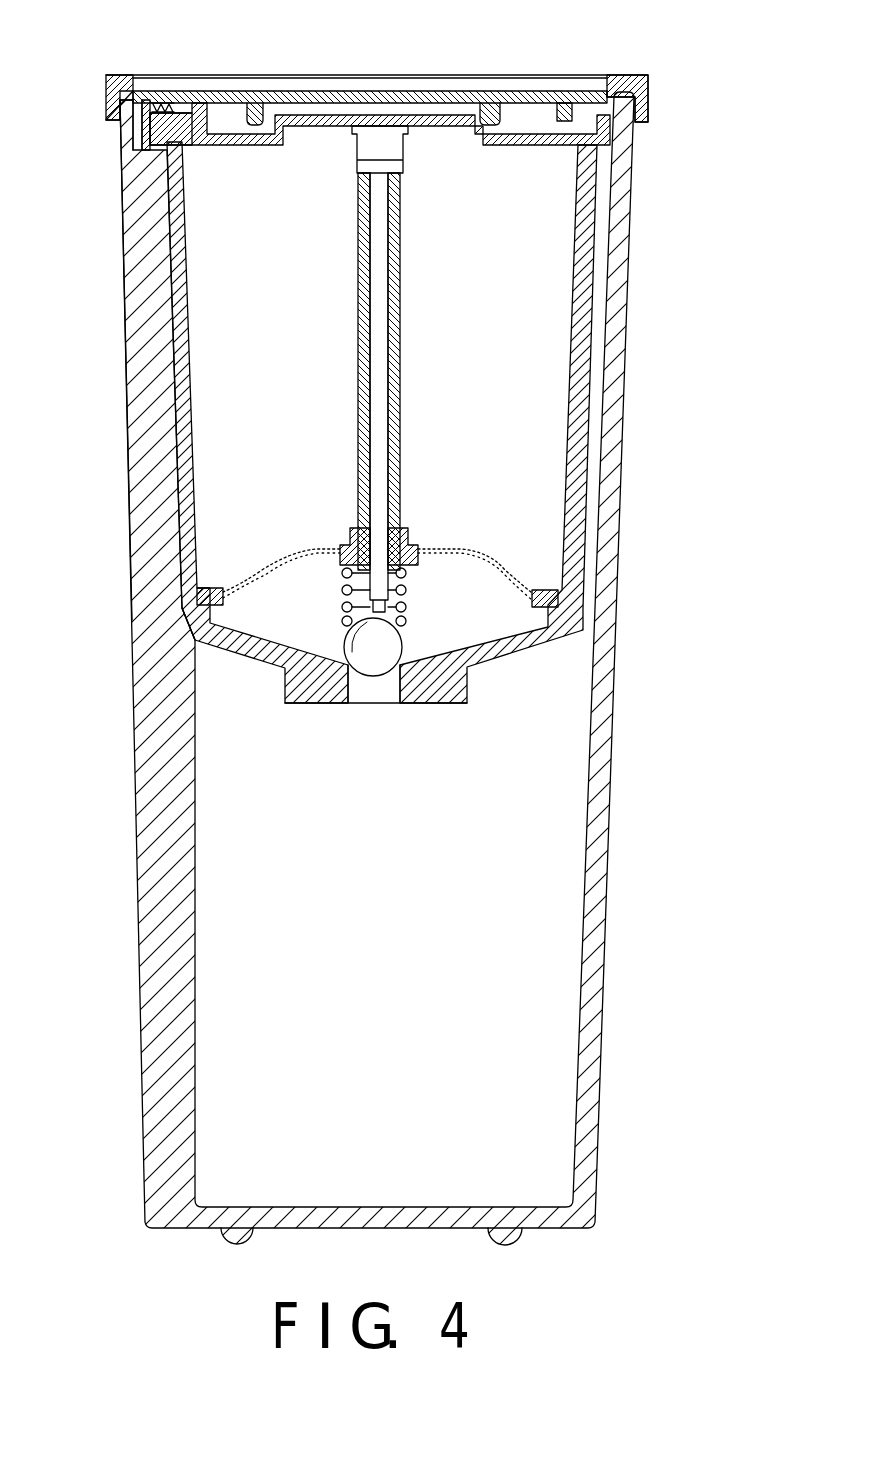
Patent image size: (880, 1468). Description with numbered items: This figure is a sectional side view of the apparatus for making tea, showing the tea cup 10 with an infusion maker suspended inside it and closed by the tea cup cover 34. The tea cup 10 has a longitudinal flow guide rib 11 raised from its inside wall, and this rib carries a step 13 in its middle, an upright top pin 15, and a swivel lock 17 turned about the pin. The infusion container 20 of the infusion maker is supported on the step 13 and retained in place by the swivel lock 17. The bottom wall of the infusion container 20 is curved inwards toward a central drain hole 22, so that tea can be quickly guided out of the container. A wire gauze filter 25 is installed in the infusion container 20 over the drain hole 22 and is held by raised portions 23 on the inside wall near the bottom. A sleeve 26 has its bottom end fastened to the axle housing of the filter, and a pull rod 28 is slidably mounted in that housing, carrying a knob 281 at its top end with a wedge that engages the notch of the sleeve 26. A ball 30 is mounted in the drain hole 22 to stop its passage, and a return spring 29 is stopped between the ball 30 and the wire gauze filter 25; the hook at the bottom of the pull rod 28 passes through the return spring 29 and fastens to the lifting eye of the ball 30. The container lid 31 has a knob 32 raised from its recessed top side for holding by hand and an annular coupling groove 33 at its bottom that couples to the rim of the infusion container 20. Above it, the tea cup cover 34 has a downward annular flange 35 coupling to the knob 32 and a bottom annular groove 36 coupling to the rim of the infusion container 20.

The tea cup 10 is at (615, 680).
The longitudinal flow guide rib 11 is at (128, 379).
The step 13 is at (200, 645).
The upright top pin 15 is at (135, 127).
The swivel lock 17 is at (155, 100).
The infusion container 20 is at (590, 415).
The drain hole 22 is at (383, 700).
The raised portions 23 is at (224, 589).
The wire gauze filter 25 is at (538, 590).
The sleeve 26 is at (400, 362).
The pull rod 28 is at (370, 303).
The knob 281 is at (372, 152).
The return spring 29 is at (342, 598).
The ball 30 is at (405, 645).
The container lid 31 is at (262, 103).
The knob 32 is at (487, 140).
The annular coupling groove 33 is at (192, 148).
The tea cup cover 34 is at (395, 91).
The downward annular flange 35 is at (478, 97).
The bottom annular groove 36 is at (640, 126).